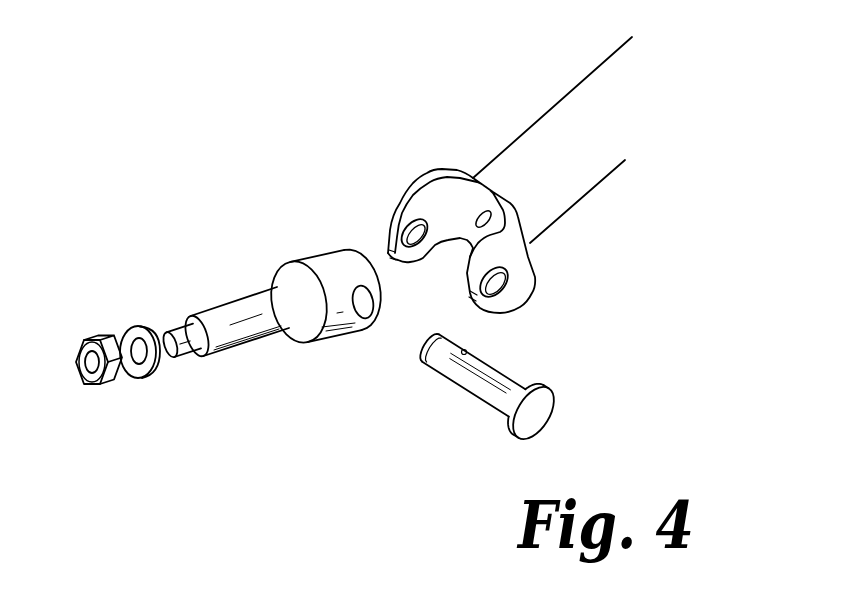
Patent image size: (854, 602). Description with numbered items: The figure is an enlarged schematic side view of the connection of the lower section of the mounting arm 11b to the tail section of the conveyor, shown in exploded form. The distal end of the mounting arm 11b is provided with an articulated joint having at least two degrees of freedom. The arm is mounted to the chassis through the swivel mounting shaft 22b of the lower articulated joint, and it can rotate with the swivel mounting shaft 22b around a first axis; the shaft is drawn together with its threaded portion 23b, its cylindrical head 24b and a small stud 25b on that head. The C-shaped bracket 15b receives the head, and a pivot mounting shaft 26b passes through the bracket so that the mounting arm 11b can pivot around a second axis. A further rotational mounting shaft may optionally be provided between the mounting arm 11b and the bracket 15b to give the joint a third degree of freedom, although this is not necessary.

The lower section of the mounting arm 11b is at (530, 143).
The C-shaped bracket 15b is at (552, 264).
The swivel mounting shaft 22b is at (216, 385).
The threaded shaft 23b is at (226, 300).
The cylindrical head 24b is at (317, 252).
The stud boss 25b is at (362, 300).
The pivot mounting shaft 26b is at (492, 372).